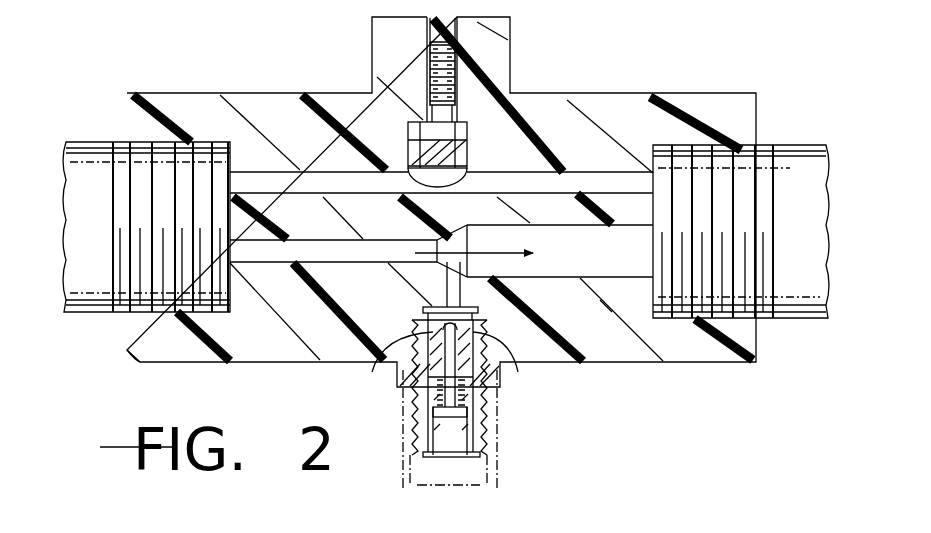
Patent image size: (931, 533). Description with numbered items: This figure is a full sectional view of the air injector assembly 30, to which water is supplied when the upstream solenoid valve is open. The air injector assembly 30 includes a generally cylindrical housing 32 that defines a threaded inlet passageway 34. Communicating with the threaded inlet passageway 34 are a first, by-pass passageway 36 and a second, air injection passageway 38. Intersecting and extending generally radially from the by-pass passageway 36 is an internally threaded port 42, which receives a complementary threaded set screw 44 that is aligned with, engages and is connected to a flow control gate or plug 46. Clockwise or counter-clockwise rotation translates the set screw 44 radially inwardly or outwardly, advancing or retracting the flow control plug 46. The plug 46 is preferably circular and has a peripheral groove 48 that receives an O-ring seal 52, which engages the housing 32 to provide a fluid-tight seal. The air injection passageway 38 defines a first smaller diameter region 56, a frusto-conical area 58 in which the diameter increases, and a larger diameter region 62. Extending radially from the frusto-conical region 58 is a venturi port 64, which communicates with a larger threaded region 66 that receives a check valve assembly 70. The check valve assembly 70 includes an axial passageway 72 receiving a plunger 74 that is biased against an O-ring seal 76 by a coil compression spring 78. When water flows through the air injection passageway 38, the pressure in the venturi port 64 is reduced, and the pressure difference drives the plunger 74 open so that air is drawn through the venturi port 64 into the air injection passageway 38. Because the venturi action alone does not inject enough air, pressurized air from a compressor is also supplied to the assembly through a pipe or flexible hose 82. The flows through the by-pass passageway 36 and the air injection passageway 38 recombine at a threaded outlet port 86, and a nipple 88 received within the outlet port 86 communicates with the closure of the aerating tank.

The air injector assembly 30 is at (672, 57).
The housing 32 is at (248, 105).
The threaded inlet passageway 34 is at (195, 145).
The by-pass passageway 36 is at (307, 170).
The air injection passageway 38 is at (257, 265).
The internally threaded port 42 is at (430, 13).
The set screw 44 is at (455, 60).
The flow control gate or plug 46 is at (500, 100).
The peripheral groove 48 is at (467, 163).
The O-ring seal 52 is at (465, 150).
The first smaller diameter region 56 is at (293, 253).
The frusto-conical area 58 is at (460, 263).
The larger diameter region 62 is at (620, 270).
The venturi port 64 is at (445, 288).
The larger threaded region 66 is at (518, 372).
The check valve assembly 70 is at (390, 438).
The axial passageway 72 is at (440, 443).
The plunger 74 is at (468, 415).
The O-ring seal 76 is at (372, 372).
The coil compression spring 78 is at (466, 393).
The pipe or flexible hose 82 is at (505, 458).
The threaded outlet port 86 is at (732, 155).
The nipple 88 is at (790, 318).